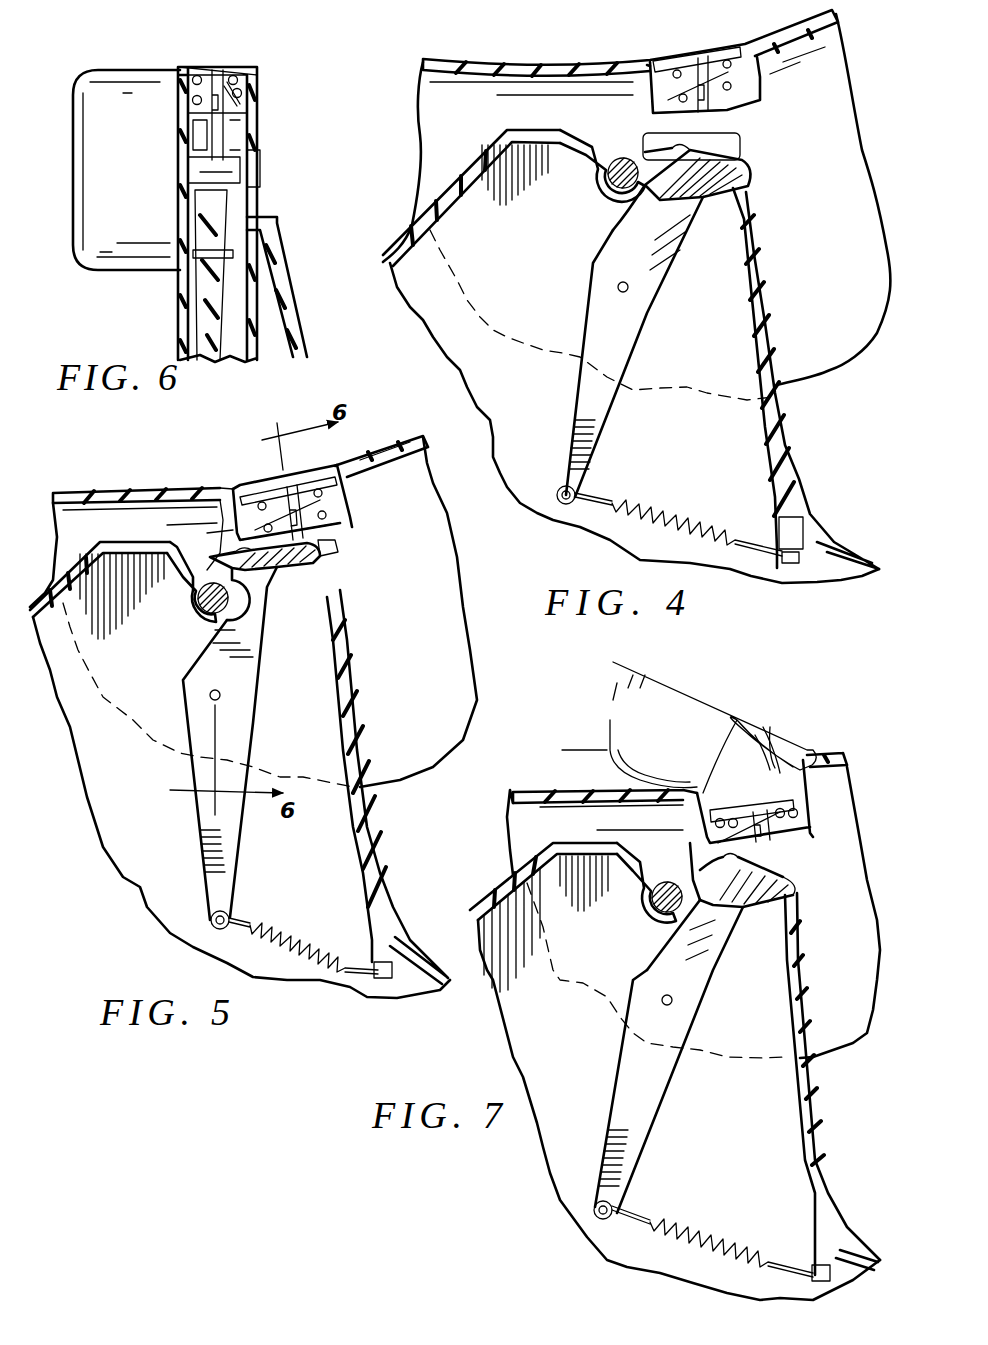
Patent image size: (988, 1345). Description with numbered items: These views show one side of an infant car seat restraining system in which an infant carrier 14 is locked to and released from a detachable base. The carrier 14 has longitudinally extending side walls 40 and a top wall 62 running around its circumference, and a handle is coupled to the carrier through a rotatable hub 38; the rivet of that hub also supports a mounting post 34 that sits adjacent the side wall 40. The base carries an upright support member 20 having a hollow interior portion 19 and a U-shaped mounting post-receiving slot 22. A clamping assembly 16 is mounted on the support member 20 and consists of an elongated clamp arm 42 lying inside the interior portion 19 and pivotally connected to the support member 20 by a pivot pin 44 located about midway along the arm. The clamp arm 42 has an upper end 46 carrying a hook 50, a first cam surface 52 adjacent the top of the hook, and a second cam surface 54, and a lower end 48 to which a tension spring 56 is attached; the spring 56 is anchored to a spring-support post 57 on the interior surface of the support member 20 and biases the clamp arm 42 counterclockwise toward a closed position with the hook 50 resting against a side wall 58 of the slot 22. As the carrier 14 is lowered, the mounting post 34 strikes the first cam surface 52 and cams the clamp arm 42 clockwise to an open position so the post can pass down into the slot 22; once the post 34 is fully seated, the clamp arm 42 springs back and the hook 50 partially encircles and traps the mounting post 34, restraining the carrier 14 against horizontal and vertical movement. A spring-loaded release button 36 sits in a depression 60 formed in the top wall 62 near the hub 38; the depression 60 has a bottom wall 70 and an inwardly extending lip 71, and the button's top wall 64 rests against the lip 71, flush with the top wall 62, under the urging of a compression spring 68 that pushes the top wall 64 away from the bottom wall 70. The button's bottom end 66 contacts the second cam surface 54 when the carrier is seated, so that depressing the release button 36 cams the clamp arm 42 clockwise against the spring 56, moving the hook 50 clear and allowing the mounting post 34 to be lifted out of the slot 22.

In FIG. 4, the infant carrier 14 is at (861, 84).
In FIG. 6, the infant carrier 14 is at (262, 66).
In FIG. 5, the infant carrier 14 is at (61, 486).
In FIG. 7, the infant carrier 14 is at (530, 785).
In FIG. 4, the clamping assembly 16 is at (567, 302).
In FIG. 5, the clamping assembly 16 is at (156, 708).
In FIG. 7, the clamping assembly 16 is at (596, 1038).
In FIG. 4, the hollow interior portion 19 is at (487, 353).
In FIG. 5, the hollow interior portion 19 is at (91, 705).
In FIG. 7, the hollow interior portion 19 is at (536, 1019).
In FIG. 4, the upright support member 20 is at (778, 364).
In FIG. 6, the upright support member 20 is at (193, 337).
In FIG. 5, the upright support member 20 is at (362, 719).
In FIG. 7, the upright support member 20 is at (822, 1112).
In FIG. 4, the mounting post-receiving slot 22 is at (621, 196).
In FIG. 4, the mounting post 34 is at (620, 160).
In FIG. 6, the mounting post 34 is at (233, 167).
In FIG. 5, the mounting post 34 is at (194, 597).
In FIG. 7, the mounting post 34 is at (655, 915).
In FIG. 4, the release button 36 is at (700, 58).
In FIG. 6, the release button 36 is at (207, 65).
In FIG. 5, the release button 36 is at (283, 490).
In FIG. 7, the release button 36 is at (727, 813).
In FIG. 6, the hub 38 is at (126, 170).
In FIG. 6, the side wall 40 is at (290, 290).
In FIG. 4, the clamp arm 42 is at (634, 347).
In FIG. 6, the clamp arm 42 is at (217, 140).
In FIG. 5, the clamp arm 42 is at (247, 738).
In FIG. 7, the clamp arm 42 is at (669, 1060).
In FIG. 4, the pivot pin 44 is at (628, 290).
In FIG. 6, the pivot pin 44 is at (217, 253).
In FIG. 5, the pivot pin 44 is at (221, 697).
In FIG. 7, the pivot pin 44 is at (673, 1002).
In FIG. 4, the upper end 46 is at (677, 227).
In FIG. 5, the upper end 46 is at (250, 613).
In FIG. 7, the upper end 46 is at (757, 913).
In FIG. 4, the lower end 48 is at (572, 483).
In FIG. 5, the lower end 48 is at (213, 900).
In FIG. 7, the lower end 48 is at (610, 1190).
In FIG. 4, the hook 50 is at (647, 153).
In FIG. 5, the hook 50 is at (240, 590).
In FIG. 7, the hook 50 is at (713, 903).
In FIG. 4, the first cam surface 52 is at (677, 133).
In FIG. 5, the first cam surface 52 is at (207, 533).
In FIG. 7, the first cam surface 52 is at (700, 840).
In FIG. 4, the second cam surface 54 is at (742, 151).
In FIG. 6, the second cam surface 54 is at (203, 127).
In FIG. 5, the second cam surface 54 is at (270, 562).
In FIG. 7, the second cam surface 54 is at (777, 867).
In FIG. 4, the spring 56 is at (676, 514).
In FIG. 5, the spring 56 is at (273, 928).
In FIG. 7, the spring 56 is at (692, 1233).
In FIG. 4, the spring-support post 57 is at (780, 533).
In FIG. 5, the spring-support post 57 is at (383, 943).
In FIG. 7, the spring-support post 57 is at (817, 1253).
In FIG. 4, the side wall 58 is at (607, 182).
In FIG. 5, the side wall 58 is at (193, 580).
In FIG. 7, the side wall 58 is at (657, 880).
In FIG. 5, the depression 60 is at (257, 500).
In FIG. 4, the top wall 62 is at (808, 32).
In FIG. 5, the top wall 62 is at (415, 441).
In FIG. 7, the top wall 62 is at (823, 757).
In FIG. 4, the top wall 64 is at (662, 60).
In FIG. 5, the top wall 64 is at (272, 484).
In FIG. 7, the top wall 64 is at (747, 775).
In FIG. 5, the bottom end 66 is at (327, 557).
In FIG. 7, the bottom end 66 is at (790, 897).
In FIG. 4, the compression spring 68 is at (755, 86).
In FIG. 6, the compression spring 68 is at (237, 98).
In FIG. 5, the compression spring 68 is at (328, 497).
In FIG. 7, the compression spring 68 is at (820, 803).
In FIG. 4, the bottom wall 70 is at (703, 84).
In FIG. 6, the bottom wall 70 is at (217, 115).
In FIG. 5, the bottom wall 70 is at (322, 525).
In FIG. 7, the bottom wall 70 is at (761, 826).
In FIG. 4, the lip 71 is at (655, 66).
In FIG. 5, the lip 71 is at (320, 475).
In FIG. 7, the lip 71 is at (773, 763).